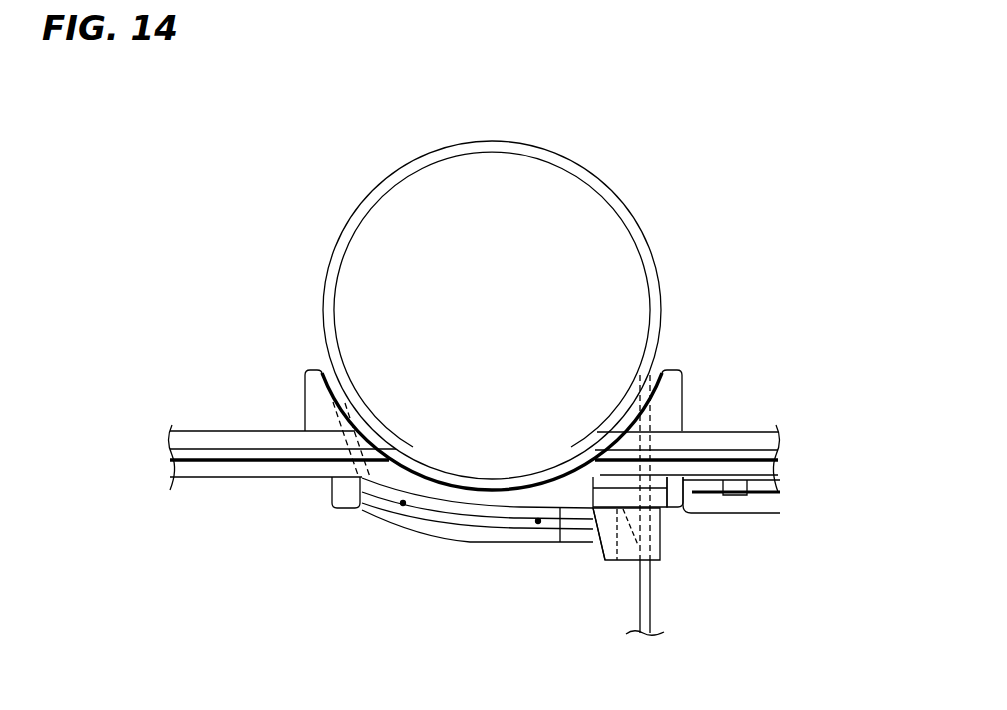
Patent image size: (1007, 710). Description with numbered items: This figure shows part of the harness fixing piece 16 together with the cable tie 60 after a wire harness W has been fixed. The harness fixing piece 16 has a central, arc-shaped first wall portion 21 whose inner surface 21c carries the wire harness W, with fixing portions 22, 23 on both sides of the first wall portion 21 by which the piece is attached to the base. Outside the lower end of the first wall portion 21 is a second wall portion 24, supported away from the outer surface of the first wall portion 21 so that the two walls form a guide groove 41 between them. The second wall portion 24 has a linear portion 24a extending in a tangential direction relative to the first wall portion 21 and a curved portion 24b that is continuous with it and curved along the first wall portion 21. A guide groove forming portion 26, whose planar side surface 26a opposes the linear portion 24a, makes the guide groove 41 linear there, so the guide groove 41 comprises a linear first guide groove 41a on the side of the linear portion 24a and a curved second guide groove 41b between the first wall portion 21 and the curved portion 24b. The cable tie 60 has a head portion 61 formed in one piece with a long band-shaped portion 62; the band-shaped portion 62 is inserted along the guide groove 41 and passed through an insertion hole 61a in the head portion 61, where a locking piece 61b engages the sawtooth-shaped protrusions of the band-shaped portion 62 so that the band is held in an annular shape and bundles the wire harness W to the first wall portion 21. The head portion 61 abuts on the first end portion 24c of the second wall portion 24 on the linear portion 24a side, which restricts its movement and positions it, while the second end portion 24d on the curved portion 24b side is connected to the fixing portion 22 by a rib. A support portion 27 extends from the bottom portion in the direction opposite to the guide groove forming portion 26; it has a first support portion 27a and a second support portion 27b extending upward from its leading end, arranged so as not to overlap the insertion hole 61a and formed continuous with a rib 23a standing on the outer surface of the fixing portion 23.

The wire harness W is at (598, 197).
The harness fixing piece 16 is at (318, 581).
The first wall portion 21 is at (493, 430).
The inner surface 21c is at (582, 448).
The fixing portion 22 is at (203, 430).
The fixing portion 23 is at (521, 445).
The rib 23a is at (330, 493).
The second wall portion 24 is at (447, 555).
The linear portion 24a is at (516, 545).
The curved portion 24b is at (388, 516).
The first end portion 24c is at (600, 562).
The second end portion 24d is at (362, 512).
The guide groove forming portion 26 is at (599, 502).
The side surface 26a is at (558, 542).
The support portion 27 is at (730, 460).
The first support portion 27a is at (658, 488).
The second support portion 27b is at (682, 512).
The guide groove 41 is at (467, 457).
The first guide groove 41a is at (538, 521).
The second guide groove 41b is at (403, 503).
The cable tie 60 is at (547, 388).
The head portion 61 is at (682, 505).
The insertion hole 61a is at (648, 575).
The locking piece 61b is at (620, 560).
The band-shaped portion 62 is at (628, 210).